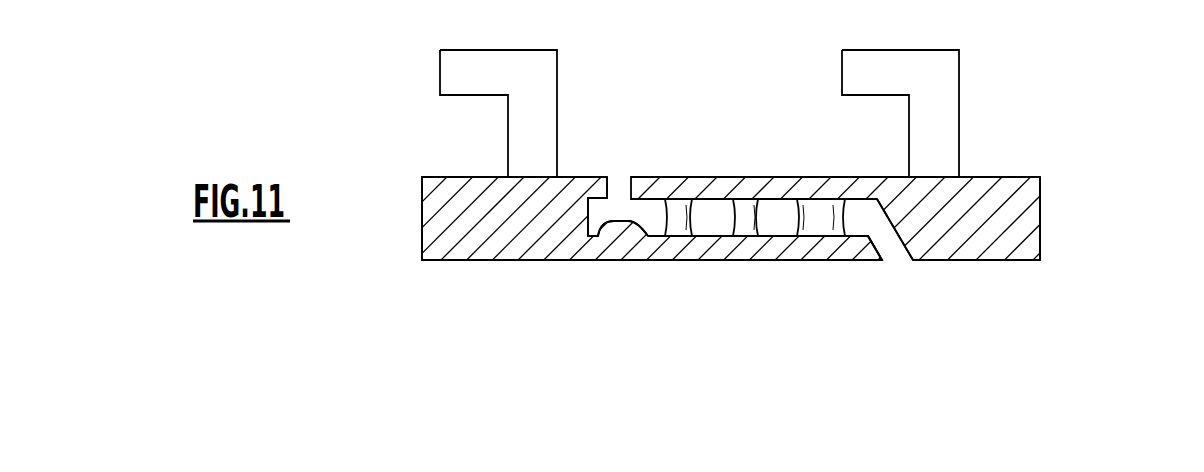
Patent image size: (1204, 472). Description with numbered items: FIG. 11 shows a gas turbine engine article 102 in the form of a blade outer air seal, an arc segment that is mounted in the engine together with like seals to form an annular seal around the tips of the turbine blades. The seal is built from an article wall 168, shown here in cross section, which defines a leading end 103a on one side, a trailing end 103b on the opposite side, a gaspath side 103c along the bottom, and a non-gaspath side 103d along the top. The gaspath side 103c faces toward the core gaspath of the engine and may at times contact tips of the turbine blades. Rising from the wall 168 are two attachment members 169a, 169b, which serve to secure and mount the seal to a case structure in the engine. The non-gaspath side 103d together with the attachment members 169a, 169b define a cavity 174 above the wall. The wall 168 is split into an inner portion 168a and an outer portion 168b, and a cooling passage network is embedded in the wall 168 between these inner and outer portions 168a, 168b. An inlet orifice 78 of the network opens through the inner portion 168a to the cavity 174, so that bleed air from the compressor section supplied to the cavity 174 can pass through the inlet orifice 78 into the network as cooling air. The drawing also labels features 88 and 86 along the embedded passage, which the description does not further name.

The gas turbine engine article 102 is at (382, 272).
The cavity 174 is at (750, 90).
The article wall 168 is at (508, 227).
The inner portion of the wall 168a is at (783, 177).
The outer portion of the wall 168b is at (788, 262).
The attachment member 169a is at (557, 73).
The attachment member 169b is at (959, 73).
The leading end 103a is at (422, 208).
The trailing end 103b is at (1040, 220).
The gaspath side 103c is at (527, 262).
The non-gaspath side 103d is at (575, 177).
The inlet orifice 78 is at (609, 188).
The protrusion 88 is at (598, 228).
The gap 86 is at (878, 240).